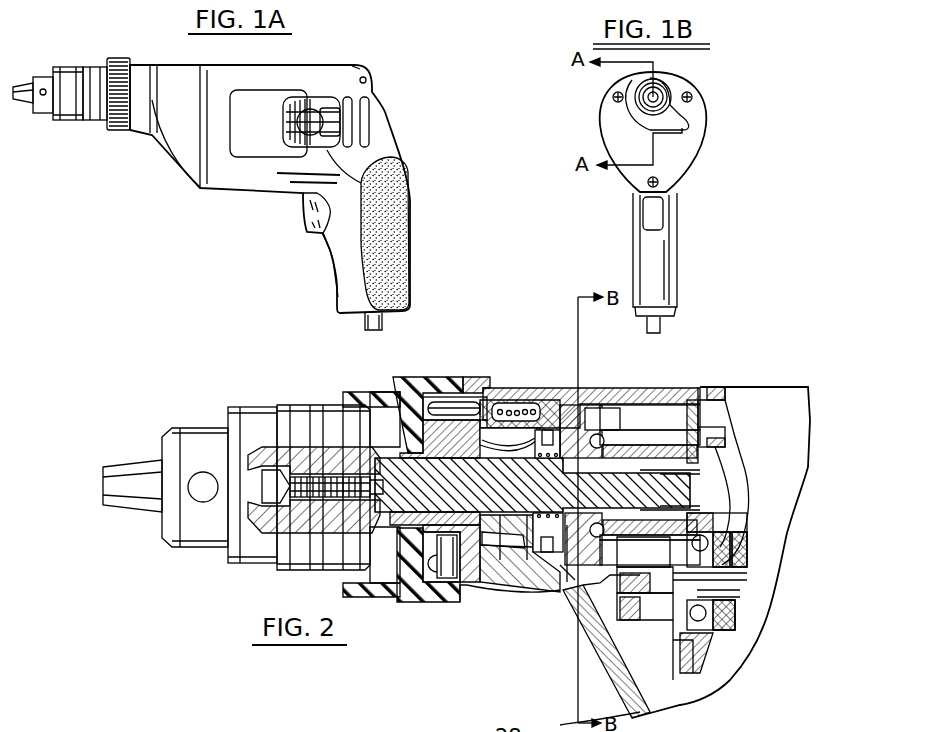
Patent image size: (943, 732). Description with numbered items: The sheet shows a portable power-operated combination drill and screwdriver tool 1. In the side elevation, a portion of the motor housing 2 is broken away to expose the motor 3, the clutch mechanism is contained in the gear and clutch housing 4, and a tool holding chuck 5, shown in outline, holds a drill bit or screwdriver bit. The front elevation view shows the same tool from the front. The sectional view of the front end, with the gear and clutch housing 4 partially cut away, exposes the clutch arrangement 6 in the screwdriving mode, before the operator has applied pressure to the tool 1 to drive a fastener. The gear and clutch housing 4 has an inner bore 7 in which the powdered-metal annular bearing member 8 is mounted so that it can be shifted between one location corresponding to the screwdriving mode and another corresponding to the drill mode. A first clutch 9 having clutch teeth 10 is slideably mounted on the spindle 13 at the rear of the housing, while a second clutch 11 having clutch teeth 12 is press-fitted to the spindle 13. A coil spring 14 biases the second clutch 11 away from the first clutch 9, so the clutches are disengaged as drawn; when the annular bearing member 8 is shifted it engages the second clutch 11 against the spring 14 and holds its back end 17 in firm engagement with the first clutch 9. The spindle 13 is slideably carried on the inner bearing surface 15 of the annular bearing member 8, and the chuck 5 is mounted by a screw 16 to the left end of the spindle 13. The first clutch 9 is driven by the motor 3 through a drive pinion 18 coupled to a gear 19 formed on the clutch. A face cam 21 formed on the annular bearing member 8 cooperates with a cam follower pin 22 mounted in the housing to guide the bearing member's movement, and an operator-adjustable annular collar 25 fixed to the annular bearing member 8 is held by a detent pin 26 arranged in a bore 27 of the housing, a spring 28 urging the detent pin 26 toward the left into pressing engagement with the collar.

In FIG. 1A, the tool 1 is at (385, 100).
In FIG. 1A, the motor housing 2 is at (352, 67).
In FIG. 1A, the motor 3 is at (313, 106).
In FIG. 1A, the gear and clutch housing 4 is at (168, 64).
In FIG. 2, the gear and clutch housing 4 is at (683, 388).
In FIG. 1A, the tool holding chuck 5 is at (78, 122).
In FIG. 2, the tool holding chuck 5 is at (173, 543).
In FIG. 2, the clutch arrangement 6 is at (640, 392).
In FIG. 2, the inner bore 7 is at (572, 430).
In FIG. 2, the annular bearing member 8 is at (490, 547).
In FIG. 2, the first clutch 9 is at (586, 592).
In FIG. 2, the clutch teeth 10 is at (587, 562).
In FIG. 2, the second clutch 11 is at (513, 563).
In FIG. 2, the clutch teeth 12 is at (537, 560).
In FIG. 2, the spindle 13 is at (508, 563).
In FIG. 2, the coil spring 14 is at (608, 431).
In FIG. 2, the inner bearing surface 15 is at (490, 410).
In FIG. 2, the screw 16 is at (305, 484).
In FIG. 2, the back end 17 is at (555, 420).
In FIG. 2, the drive pinion 18 is at (668, 600).
In FIG. 2, the gear 19 is at (570, 575).
In FIG. 2, the face cam 21 is at (430, 600).
In FIG. 2, the pin 22 is at (457, 578).
In FIG. 2, the annular collar 25 is at (377, 600).
In FIG. 2, the detent pin 26 is at (462, 410).
In FIG. 2, the bore 27 is at (522, 410).
In FIG. 2, the spring 28 is at (505, 408).